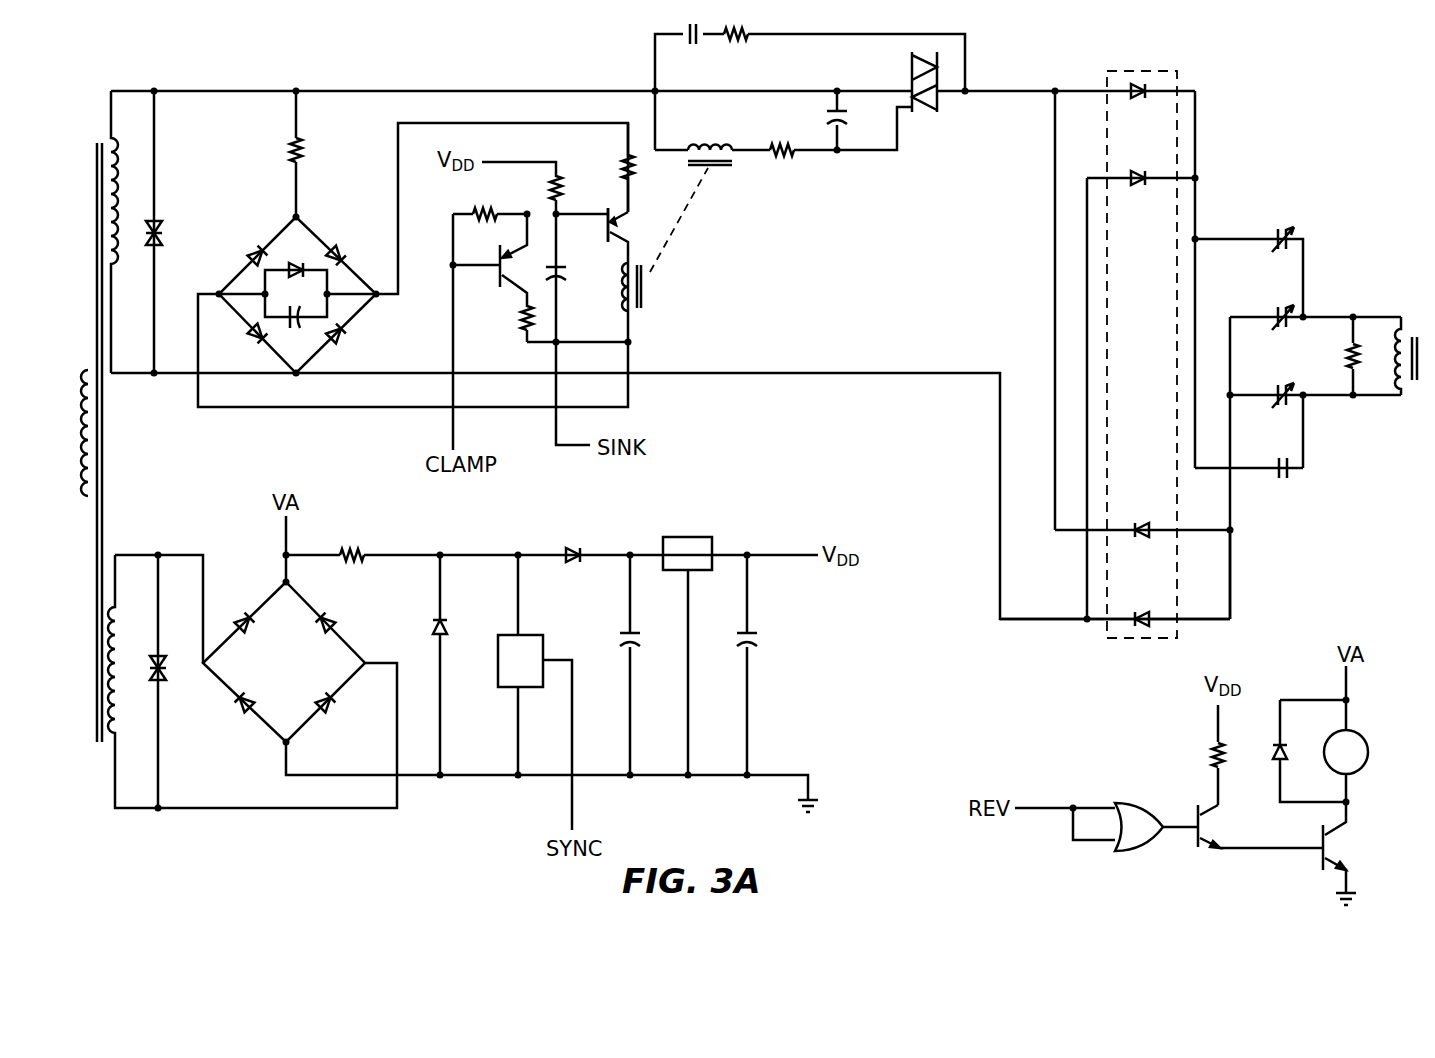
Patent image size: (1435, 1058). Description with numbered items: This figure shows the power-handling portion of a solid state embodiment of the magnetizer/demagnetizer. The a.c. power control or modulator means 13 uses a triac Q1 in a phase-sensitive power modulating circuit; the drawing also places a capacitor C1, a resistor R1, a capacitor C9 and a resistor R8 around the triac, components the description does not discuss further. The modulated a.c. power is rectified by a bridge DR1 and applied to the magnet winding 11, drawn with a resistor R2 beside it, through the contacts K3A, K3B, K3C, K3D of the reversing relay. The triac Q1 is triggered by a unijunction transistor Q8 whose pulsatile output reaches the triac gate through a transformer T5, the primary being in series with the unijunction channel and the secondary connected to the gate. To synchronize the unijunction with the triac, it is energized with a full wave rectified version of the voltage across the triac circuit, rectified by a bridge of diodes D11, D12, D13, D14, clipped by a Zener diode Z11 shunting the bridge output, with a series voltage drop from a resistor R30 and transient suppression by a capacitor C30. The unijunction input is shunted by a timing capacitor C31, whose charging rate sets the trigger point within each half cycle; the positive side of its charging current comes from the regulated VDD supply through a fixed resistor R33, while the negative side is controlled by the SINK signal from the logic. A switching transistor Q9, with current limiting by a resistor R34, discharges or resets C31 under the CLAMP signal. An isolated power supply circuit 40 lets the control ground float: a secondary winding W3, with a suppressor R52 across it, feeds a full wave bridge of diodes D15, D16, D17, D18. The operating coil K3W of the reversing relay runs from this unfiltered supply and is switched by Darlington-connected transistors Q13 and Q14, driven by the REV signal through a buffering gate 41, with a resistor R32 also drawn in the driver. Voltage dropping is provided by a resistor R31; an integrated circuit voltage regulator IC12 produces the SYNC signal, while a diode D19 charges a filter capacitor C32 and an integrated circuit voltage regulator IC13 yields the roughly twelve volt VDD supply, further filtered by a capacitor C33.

The resistor R30 is at (300, 145).
The Zener diode Z11 is at (291, 265).
The diode D11 is at (252, 250).
The diode D12 is at (331, 250).
The diode D13 is at (252, 340).
The diode D14 is at (338, 342).
The capacitor C30 is at (295, 327).
The fixed resistor R33 is at (552, 186).
The unijunction transistor Q8 is at (606, 215).
The switching transistor Q9 is at (498, 272).
The resistor R34 is at (522, 318).
The timing capacitor C31 is at (562, 280).
The transformer T5 is at (645, 295).
The capacitor C1 is at (687, 44).
The resistor R1 is at (738, 42).
The capacitor C9 is at (827, 116).
The resistor R8 is at (785, 158).
The triac Q1 is at (924, 105).
The a.c. power control or modulator means 13 is at (845, 177).
The bridge DR1 is at (1180, 72).
The contact K3A is at (1276, 240).
The contact K3B is at (1276, 318).
The contact K3C is at (1276, 396).
The contact K3D is at (1278, 469).
The resistor R2 is at (1328, 356).
The magnet winding 11 is at (1412, 330).
The diode D15 is at (242, 617).
The diode D16 is at (330, 617).
The diode D17 is at (246, 715).
The diode D18 is at (322, 712).
The suppressor R52 is at (165, 680).
The secondary winding W3 is at (112, 718).
The isolated power supply circuit 40 is at (331, 822).
The resistor R31 is at (350, 548).
The diode D19 is at (572, 565).
The integrated circuit voltage regulator IC12 is at (492, 692).
The integrated circuit voltage regulator IC13 is at (690, 538).
The filter capacitor C32 is at (636, 650).
The capacitor C33 is at (753, 650).
The resistor R32 is at (1210, 755).
The operating coil K3W is at (1362, 736).
The transistor Q13 is at (1192, 850).
The transistor Q14 is at (1320, 852).
The buffering gate 41 is at (1121, 850).